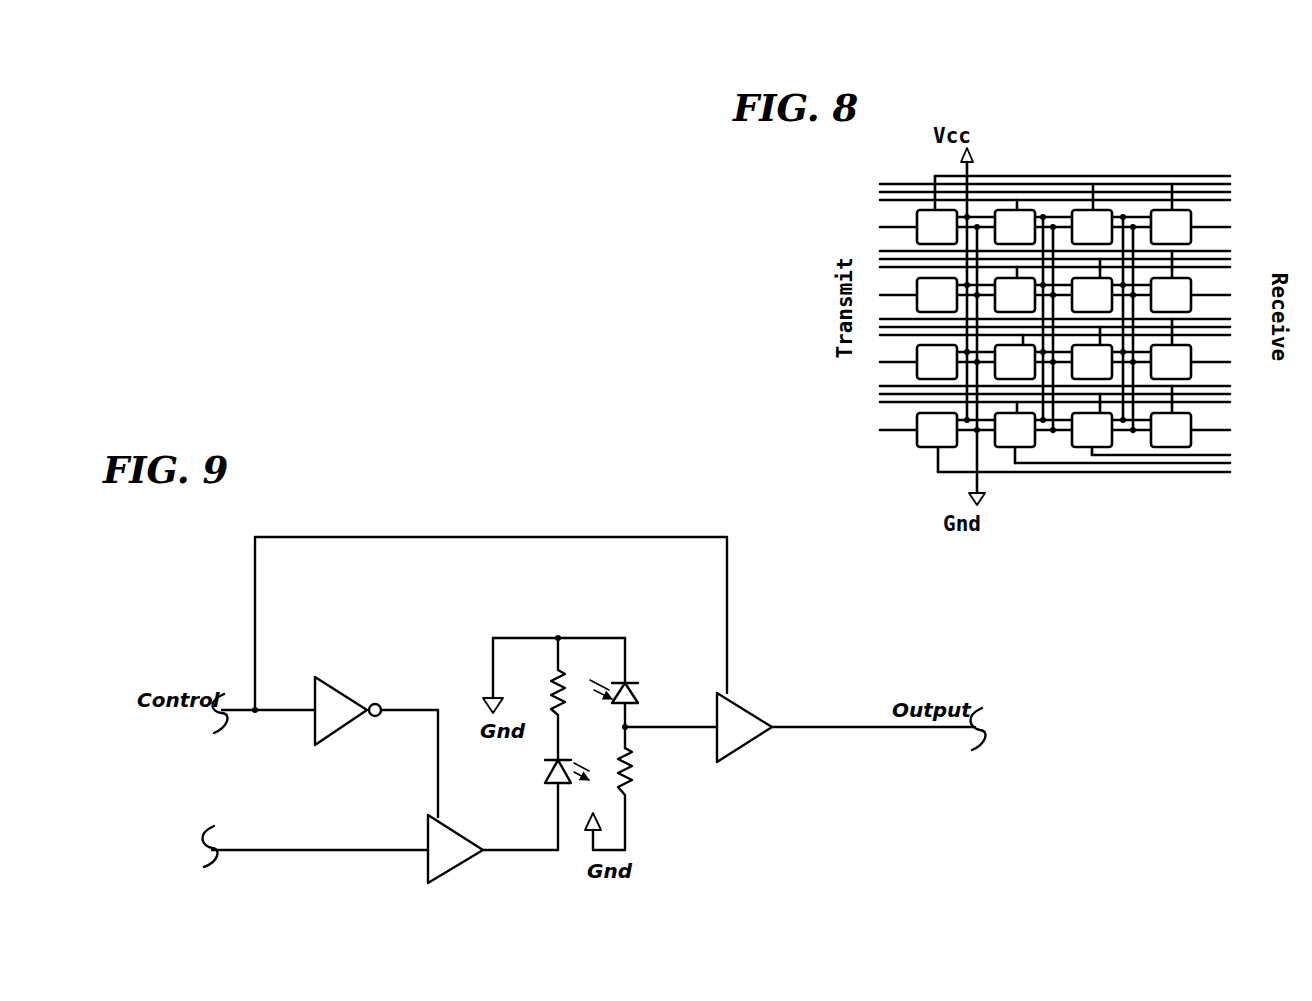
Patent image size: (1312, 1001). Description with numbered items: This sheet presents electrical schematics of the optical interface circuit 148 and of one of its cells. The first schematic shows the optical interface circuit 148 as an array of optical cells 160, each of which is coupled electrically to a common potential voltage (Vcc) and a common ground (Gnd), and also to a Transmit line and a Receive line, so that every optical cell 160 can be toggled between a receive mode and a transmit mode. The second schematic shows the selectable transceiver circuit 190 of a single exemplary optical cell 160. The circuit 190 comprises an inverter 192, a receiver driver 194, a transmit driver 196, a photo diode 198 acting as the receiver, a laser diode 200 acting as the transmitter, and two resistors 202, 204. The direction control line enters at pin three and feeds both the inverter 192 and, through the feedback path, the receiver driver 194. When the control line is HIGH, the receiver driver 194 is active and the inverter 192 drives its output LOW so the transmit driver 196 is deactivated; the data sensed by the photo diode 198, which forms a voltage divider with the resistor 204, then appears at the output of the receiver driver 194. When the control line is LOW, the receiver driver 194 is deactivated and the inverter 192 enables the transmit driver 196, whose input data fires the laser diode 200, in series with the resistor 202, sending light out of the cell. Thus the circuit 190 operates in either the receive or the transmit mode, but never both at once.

In FIG. 8, the optical interface circuit 148 is at (1264, 205).
In FIG. 9, the optical interface circuit 148 is at (807, 834).
In FIG. 8, the optical cell 160 is at (1168, 228).
In FIG. 9, the optical cell 160 is at (749, 874).
In FIG. 9, the selectable transceiver circuit 190 is at (407, 511).
In FIG. 9, the inverter 192 is at (330, 685).
In FIG. 9, the receiver driver 194 is at (750, 707).
In FIG. 9, the transmit driver 196 is at (447, 876).
In FIG. 9, the photo diode 198 is at (631, 682).
In FIG. 9, the laser diode 200 is at (557, 787).
In FIG. 9, the resistor 202 is at (540, 699).
In FIG. 9, the resistor 204 is at (635, 799).